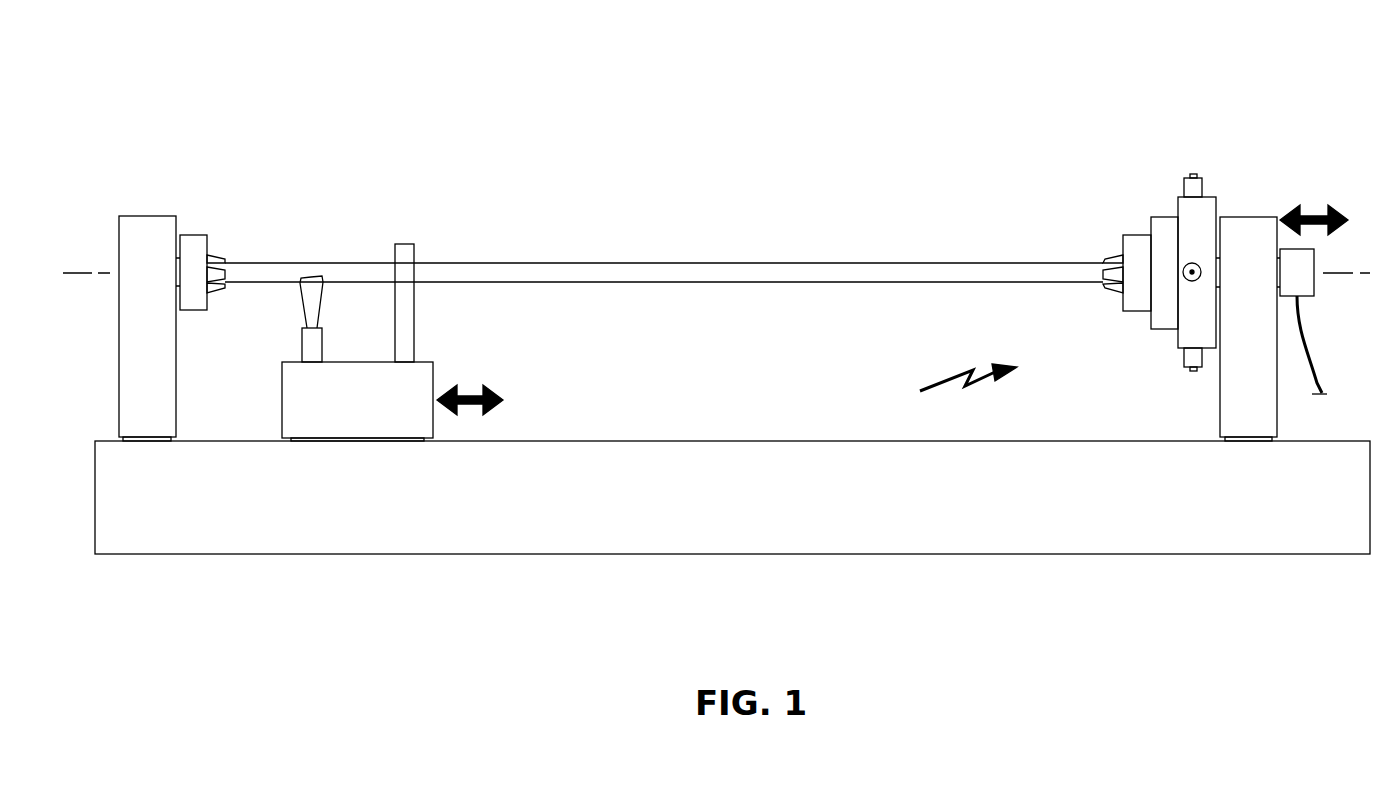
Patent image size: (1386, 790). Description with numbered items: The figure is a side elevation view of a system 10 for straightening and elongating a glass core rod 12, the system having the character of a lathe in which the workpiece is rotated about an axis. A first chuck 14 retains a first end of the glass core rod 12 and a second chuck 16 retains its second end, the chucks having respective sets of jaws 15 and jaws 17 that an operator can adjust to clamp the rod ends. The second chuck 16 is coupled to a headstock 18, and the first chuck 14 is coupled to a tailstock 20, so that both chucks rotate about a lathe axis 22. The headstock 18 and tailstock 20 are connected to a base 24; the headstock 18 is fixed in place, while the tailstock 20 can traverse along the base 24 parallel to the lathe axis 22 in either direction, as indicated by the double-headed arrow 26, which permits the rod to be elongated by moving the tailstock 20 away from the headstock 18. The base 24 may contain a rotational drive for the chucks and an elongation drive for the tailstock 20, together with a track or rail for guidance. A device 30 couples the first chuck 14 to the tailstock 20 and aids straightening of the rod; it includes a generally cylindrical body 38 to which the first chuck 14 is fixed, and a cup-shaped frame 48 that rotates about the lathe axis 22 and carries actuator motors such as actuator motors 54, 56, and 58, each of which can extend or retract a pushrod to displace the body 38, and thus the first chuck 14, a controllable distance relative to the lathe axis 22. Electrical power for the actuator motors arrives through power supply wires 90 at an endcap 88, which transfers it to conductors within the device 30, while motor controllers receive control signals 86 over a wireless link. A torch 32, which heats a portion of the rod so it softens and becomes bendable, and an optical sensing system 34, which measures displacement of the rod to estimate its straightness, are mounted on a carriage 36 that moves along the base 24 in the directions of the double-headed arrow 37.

The system 10 is at (639, 84).
The glass core rod 12 is at (588, 263).
The first chuck 14 is at (1128, 312).
The jaws 15 is at (1108, 256).
The second chuck 16 is at (195, 235).
The jaws 17 is at (219, 293).
The headstock 18 is at (145, 216).
The tailstock 20 is at (1255, 217).
The lathe axis 22 is at (86, 273).
The base 24 is at (506, 555).
The double-headed arrow 26 is at (1315, 210).
The device 30 is at (1122, 172).
The torch 32 is at (302, 342).
The optical sensing system 34 is at (414, 343).
The carriage 36 is at (282, 398).
The double-headed arrow 37 is at (470, 392).
The body 38 is at (1158, 330).
The frame 48 is at (1210, 349).
The actuator motor 54 is at (1188, 265).
The actuator motor 56 is at (1203, 190).
The actuator motor 58 is at (1186, 362).
The control signals 86 is at (953, 377).
The endcap 88 is at (1316, 256).
The power supply wires 90 is at (1314, 354).